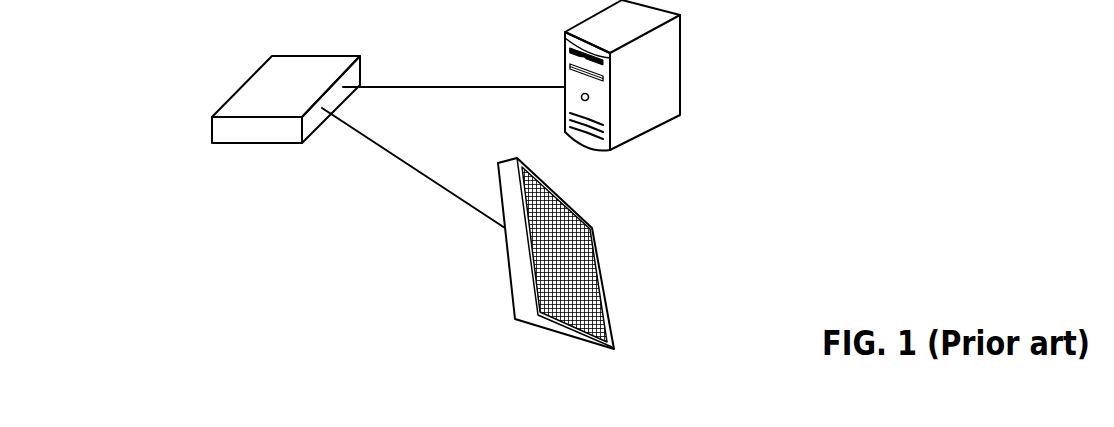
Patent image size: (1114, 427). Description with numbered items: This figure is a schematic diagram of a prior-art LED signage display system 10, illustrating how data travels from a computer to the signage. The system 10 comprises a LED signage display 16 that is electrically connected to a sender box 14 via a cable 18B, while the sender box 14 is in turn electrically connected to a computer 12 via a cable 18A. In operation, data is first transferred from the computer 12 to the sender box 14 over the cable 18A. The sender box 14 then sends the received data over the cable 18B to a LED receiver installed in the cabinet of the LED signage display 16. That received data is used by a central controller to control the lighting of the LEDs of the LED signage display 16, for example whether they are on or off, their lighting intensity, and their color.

The LED signage display system 10 is at (128, 62).
The computer 12 is at (682, 60).
The sender box 14 is at (243, 83).
The LED signage display 16 is at (598, 277).
The cable 18A is at (452, 87).
The cable 18B is at (423, 178).